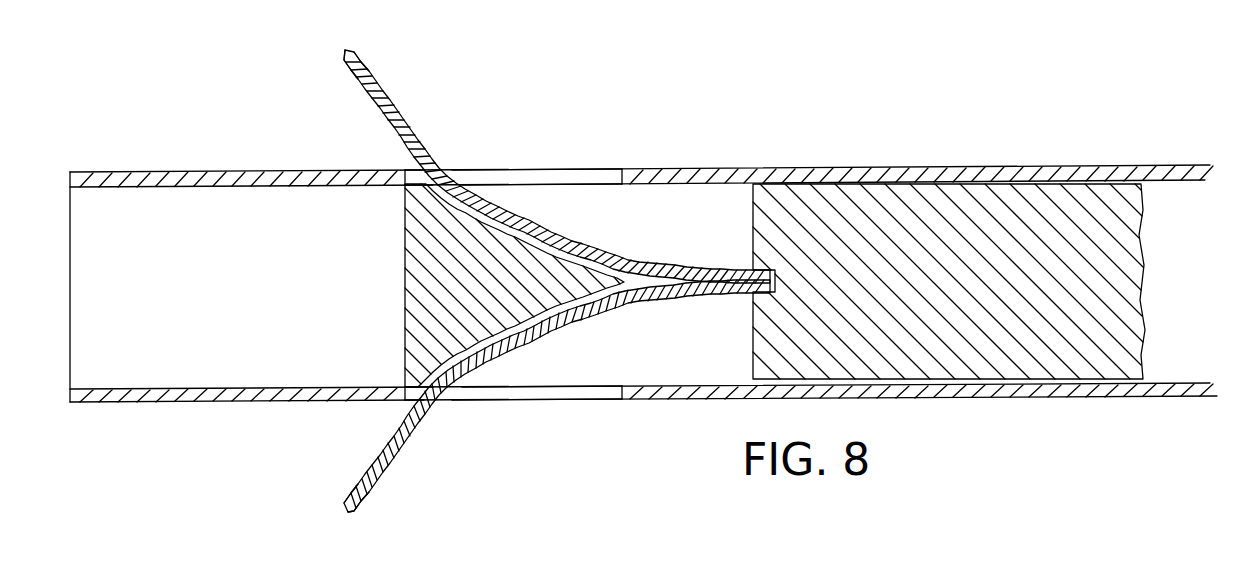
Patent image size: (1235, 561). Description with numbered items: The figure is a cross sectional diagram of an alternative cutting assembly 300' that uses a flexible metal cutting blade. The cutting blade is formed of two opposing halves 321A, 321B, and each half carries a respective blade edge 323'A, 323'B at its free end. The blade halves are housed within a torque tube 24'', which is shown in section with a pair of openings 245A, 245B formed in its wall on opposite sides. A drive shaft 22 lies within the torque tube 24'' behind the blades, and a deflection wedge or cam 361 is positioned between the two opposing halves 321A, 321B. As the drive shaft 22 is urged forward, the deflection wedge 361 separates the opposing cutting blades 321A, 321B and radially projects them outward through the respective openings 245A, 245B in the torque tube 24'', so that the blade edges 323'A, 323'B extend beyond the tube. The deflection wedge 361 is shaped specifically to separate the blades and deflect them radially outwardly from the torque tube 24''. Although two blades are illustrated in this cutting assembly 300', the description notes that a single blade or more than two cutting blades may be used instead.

The alternative cutting assembly 300' is at (643, 293).
The torque tube 24'' is at (643, 259).
The opening 245A is at (545, 166).
The opening 245B is at (536, 402).
The drive shaft 22 is at (1132, 293).
The deflection wedge 361 is at (405, 290).
The opposing half of cutting blade 321A is at (380, 118).
The opposing half of cutting blade 321B is at (389, 467).
The blade edge 323'A is at (404, 52).
The blade edge 323'B is at (398, 522).